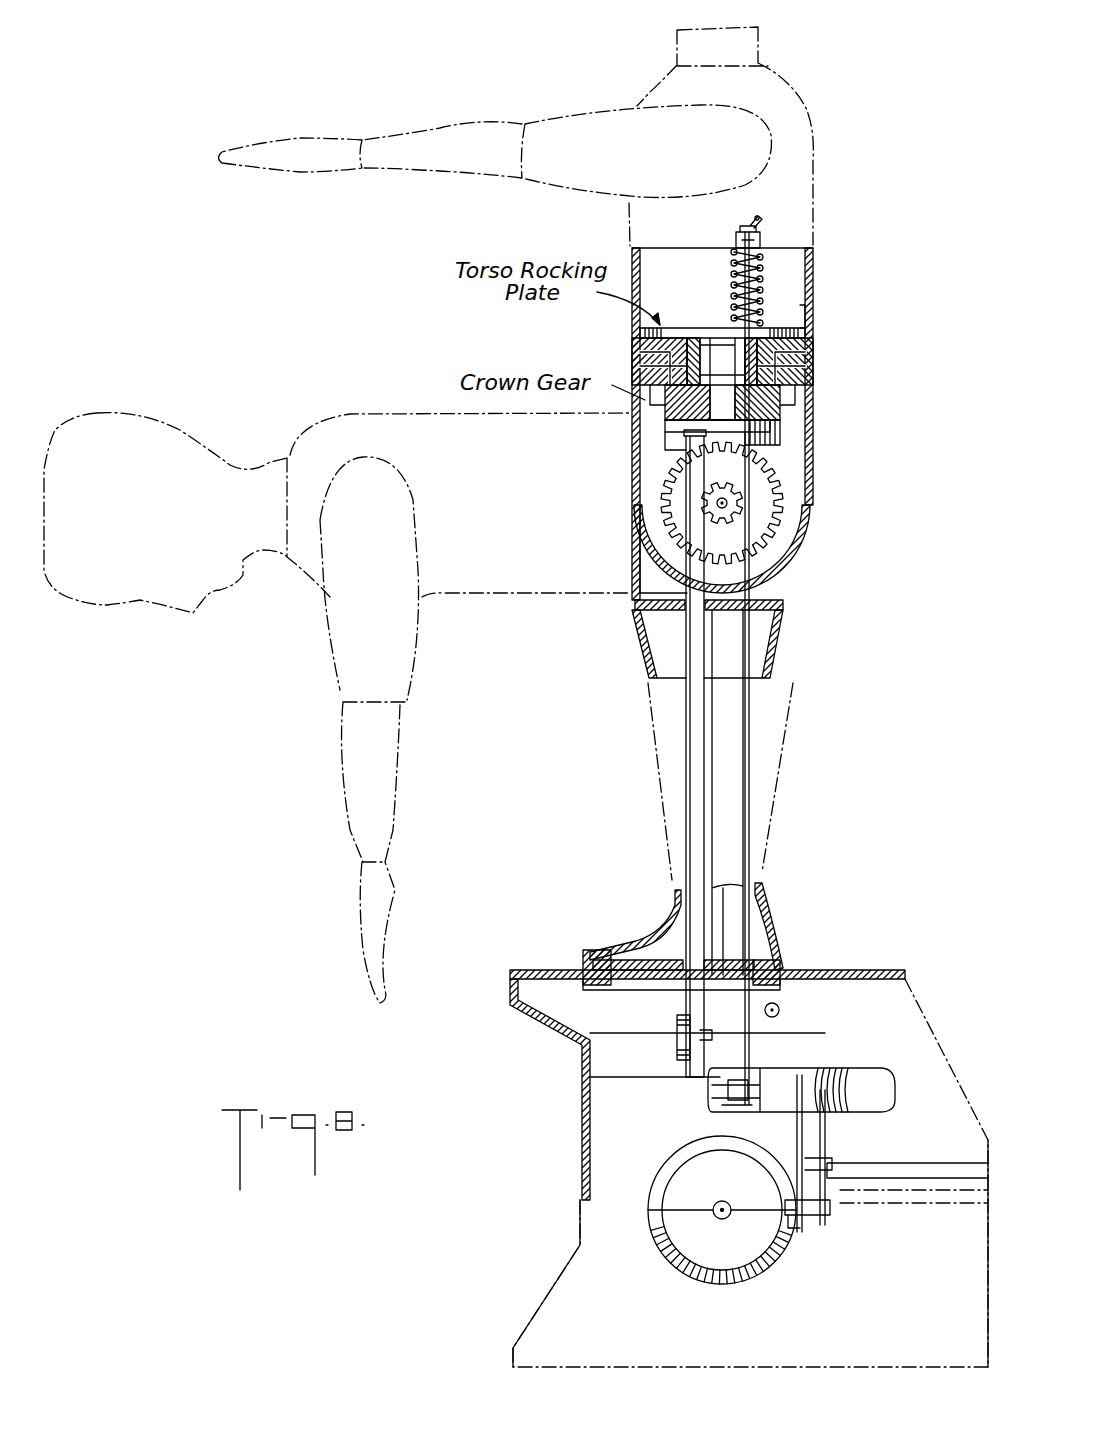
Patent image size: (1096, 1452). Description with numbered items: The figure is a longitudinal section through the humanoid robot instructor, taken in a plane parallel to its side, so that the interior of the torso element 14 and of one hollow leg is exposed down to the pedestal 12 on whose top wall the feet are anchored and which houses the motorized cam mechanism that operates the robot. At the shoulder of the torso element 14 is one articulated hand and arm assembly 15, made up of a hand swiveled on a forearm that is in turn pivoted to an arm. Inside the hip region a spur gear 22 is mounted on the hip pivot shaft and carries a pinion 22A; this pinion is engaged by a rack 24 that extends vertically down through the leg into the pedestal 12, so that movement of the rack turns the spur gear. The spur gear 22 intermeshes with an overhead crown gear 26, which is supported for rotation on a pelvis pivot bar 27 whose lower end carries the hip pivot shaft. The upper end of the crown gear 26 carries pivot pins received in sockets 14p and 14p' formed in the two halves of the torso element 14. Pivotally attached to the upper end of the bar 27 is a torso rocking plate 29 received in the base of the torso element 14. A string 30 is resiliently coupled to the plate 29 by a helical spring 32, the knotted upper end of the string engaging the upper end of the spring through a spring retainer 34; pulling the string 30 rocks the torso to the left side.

The pedestal 12 is at (580, 1140).
The torso element 14 is at (815, 273).
The socket 14p is at (617, 357).
The socket 14p' is at (824, 361).
The articulated hand and arm assembly 15 is at (565, 128).
The spur gear 22 is at (782, 480).
The pinion 22A is at (738, 510).
The rack 24 is at (686, 792).
The crown gear 26 is at (782, 378).
The pelvis pivot bar 27 is at (730, 418).
The torso rocking plate 29 is at (810, 310).
The string 30 is at (735, 265).
The helical spring 32 is at (763, 262).
The spring retainer 34 is at (754, 234).